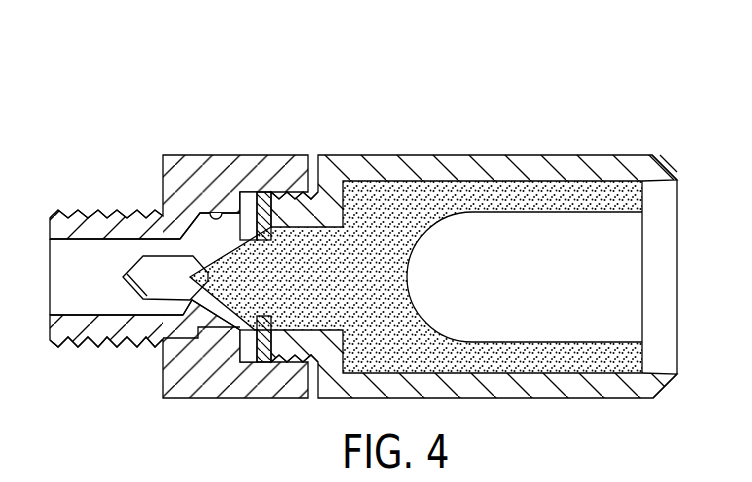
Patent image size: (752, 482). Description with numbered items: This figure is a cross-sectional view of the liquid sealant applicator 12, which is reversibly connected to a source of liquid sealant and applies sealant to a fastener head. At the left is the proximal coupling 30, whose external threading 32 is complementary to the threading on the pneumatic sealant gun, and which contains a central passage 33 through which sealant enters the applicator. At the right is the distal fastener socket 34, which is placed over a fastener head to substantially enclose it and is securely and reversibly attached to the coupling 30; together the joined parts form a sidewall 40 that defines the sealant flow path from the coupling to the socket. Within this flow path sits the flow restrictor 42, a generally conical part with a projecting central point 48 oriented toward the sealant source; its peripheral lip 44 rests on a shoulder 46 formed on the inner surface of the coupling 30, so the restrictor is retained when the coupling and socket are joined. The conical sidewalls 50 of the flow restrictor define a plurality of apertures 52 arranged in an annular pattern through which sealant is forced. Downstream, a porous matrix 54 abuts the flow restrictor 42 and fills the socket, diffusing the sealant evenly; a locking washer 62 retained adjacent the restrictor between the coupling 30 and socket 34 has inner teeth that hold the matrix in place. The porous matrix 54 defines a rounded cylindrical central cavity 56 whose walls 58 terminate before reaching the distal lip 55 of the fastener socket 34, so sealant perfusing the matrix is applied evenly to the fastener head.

The liquid sealant applicator 12 is at (258, 83).
The proximal coupling 30 is at (262, 154).
The threading 32 is at (118, 212).
The central passage 33 is at (86, 242).
The distal fastener socket 34 is at (466, 154).
The sidewall 40 is at (367, 115).
The flow restrictor 42 is at (180, 318).
The peripheral lip 44 is at (236, 192).
The shoulder 46 is at (213, 208).
The projecting central point 48 is at (122, 278).
The conical sidewalls 50 is at (245, 368).
The apertures 52 is at (237, 365).
The porous matrix 54 is at (425, 181).
The distal lip 55 is at (675, 179).
The central cavity 56 is at (563, 213).
The walls 58 is at (643, 206).
The locking washer 62 is at (272, 370).